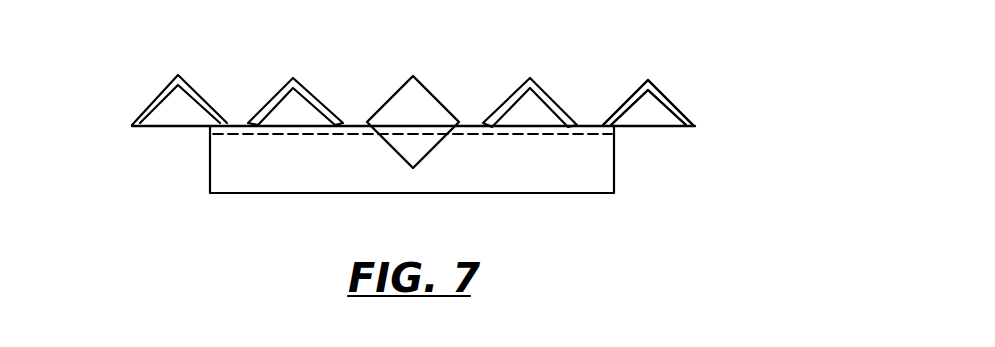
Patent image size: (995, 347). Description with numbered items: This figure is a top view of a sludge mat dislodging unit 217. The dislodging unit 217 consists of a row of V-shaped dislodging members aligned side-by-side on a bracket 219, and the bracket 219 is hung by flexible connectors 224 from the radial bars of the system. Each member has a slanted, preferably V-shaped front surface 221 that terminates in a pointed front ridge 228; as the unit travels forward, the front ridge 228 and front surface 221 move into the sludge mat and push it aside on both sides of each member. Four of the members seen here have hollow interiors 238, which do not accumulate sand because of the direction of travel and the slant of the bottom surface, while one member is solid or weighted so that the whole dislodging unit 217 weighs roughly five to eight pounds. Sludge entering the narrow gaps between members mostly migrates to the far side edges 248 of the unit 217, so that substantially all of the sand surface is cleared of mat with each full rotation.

The sludge mat dislodging unit 217 is at (683, 78).
The bracket 219 is at (548, 172).
The front surface 221 is at (547, 97).
The flexible connector 224 is at (297, 78).
The front ridge 228 is at (648, 78).
The hollow interior 238 is at (177, 110).
The far side edge 248 is at (133, 126).